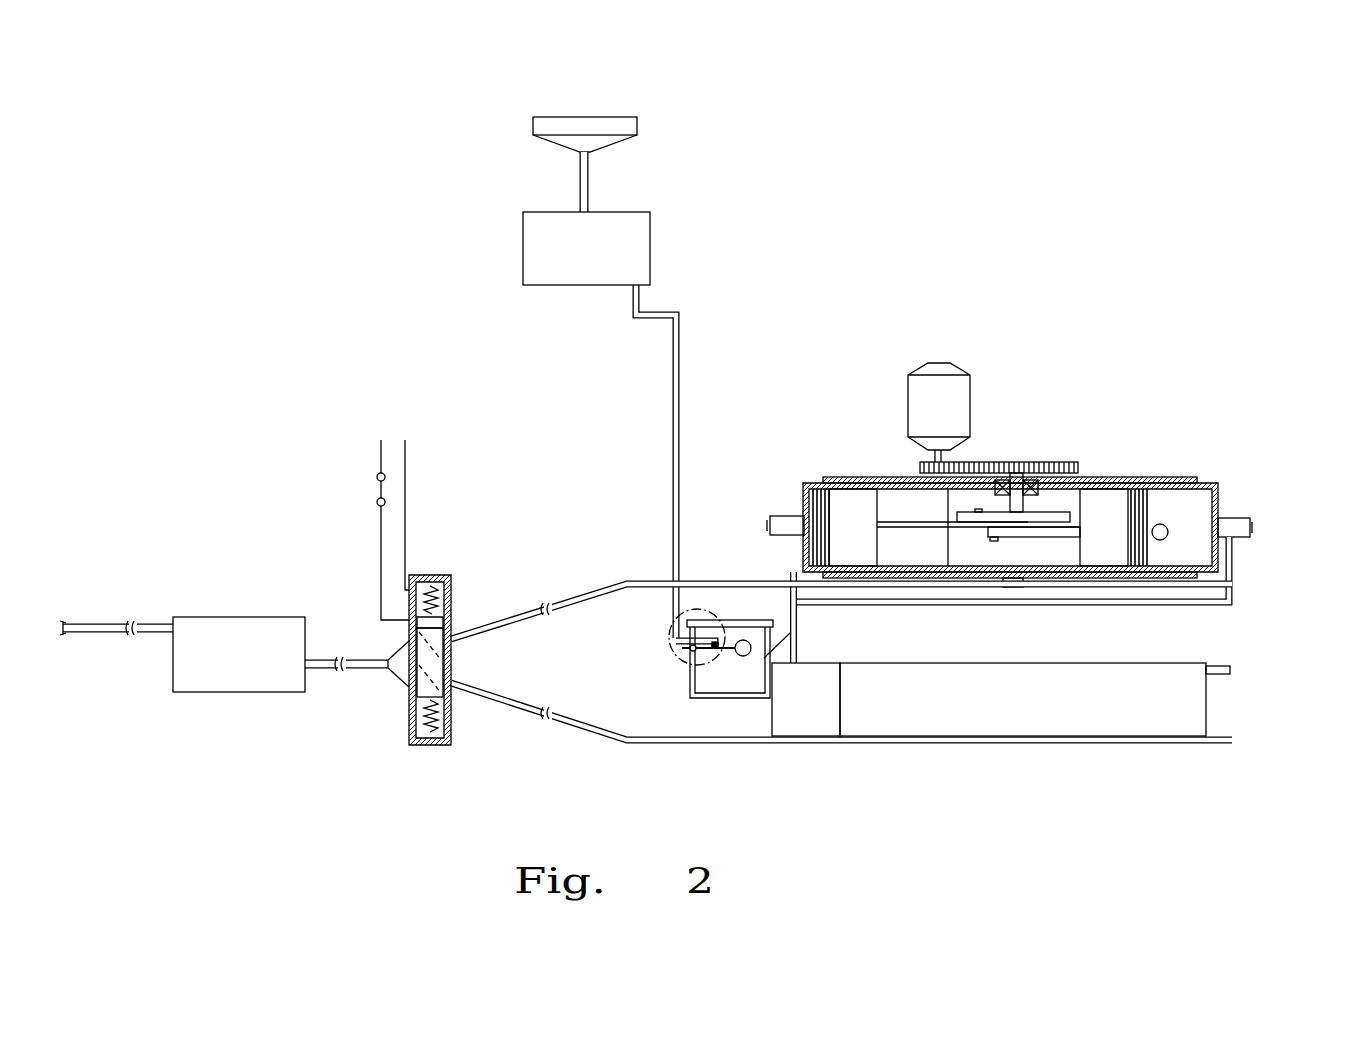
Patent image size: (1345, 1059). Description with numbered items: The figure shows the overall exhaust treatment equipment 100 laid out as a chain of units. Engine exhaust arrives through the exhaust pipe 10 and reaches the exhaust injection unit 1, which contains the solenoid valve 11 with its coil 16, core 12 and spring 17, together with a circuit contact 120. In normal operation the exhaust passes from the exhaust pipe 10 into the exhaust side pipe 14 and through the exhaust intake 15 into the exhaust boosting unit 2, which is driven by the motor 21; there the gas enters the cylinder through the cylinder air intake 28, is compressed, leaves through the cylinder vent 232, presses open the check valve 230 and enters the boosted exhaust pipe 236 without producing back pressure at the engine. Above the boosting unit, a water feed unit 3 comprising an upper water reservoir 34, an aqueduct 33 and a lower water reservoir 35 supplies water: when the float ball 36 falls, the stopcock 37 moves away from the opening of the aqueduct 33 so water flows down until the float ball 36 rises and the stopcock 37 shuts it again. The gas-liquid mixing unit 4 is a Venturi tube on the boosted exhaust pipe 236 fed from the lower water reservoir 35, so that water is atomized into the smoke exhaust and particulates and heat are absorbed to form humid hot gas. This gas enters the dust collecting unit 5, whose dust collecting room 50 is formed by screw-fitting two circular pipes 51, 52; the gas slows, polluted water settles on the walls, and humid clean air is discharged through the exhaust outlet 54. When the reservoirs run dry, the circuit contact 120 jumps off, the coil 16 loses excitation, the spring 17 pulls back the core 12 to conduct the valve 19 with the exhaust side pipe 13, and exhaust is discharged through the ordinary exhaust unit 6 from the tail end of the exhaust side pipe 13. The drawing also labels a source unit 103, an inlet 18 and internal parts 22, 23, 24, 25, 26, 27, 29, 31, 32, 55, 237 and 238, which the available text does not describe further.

The liquid supply system 100 is at (990, 88).
The exhaust injection unit 1 is at (438, 647).
The exhaust boosting unit 2 is at (1000, 502).
The feeder 3 is at (558, 336).
The gas-liquid mixing unit 4 is at (691, 668).
The dust collecting unit 5 is at (1020, 718).
The ordinary exhaust unit 6 is at (1122, 752).
The exhaust pipe 10 is at (356, 672).
The solenoid valve 11 is at (440, 582).
The core 12 is at (432, 662).
The exhaust side pipe 13 is at (535, 720).
The exhaust side pipe 14 is at (600, 598).
The exhaust intake 15 is at (1043, 578).
The coil 16 is at (446, 611).
The spring 17 is at (420, 732).
The upper port 18 is at (410, 642).
The valve 19 is at (410, 688).
The motor 21 is at (940, 362).
The cylinder 22 is at (918, 468).
The gear and bearing assembly 23 is at (1016, 478).
The drive plate 24 is at (1022, 505).
The right piston 25 is at (1105, 505).
The piston rod 26 is at (972, 560).
The piston seals 27 is at (822, 500).
The cylinder air intake 28 is at (1168, 528).
The slider plate 29 is at (1073, 540).
The hopper 31 is at (580, 117).
The funnel 32 is at (548, 132).
The aqueduct 33 is at (580, 175).
The upper water reservoir 34 is at (523, 252).
The lower water reservoir 35 is at (707, 679).
The float ball 36 is at (738, 658).
The stopcock 37 is at (722, 652).
The dust collecting room 50 is at (1063, 742).
The circular pipe 51 is at (770, 728).
The circular pipe 52 is at (1208, 692).
The exhaust outlet 54 is at (1218, 666).
The tank chamber 55 is at (836, 722).
The pump unit 103 is at (210, 617).
The circuit contact 120 is at (377, 490).
The check valve 230 is at (768, 526).
The cylinder vent 232 is at (1222, 522).
The boosted exhaust pipe 236 is at (790, 605).
The sensor 237 is at (978, 509).
The support 238 is at (1020, 588).